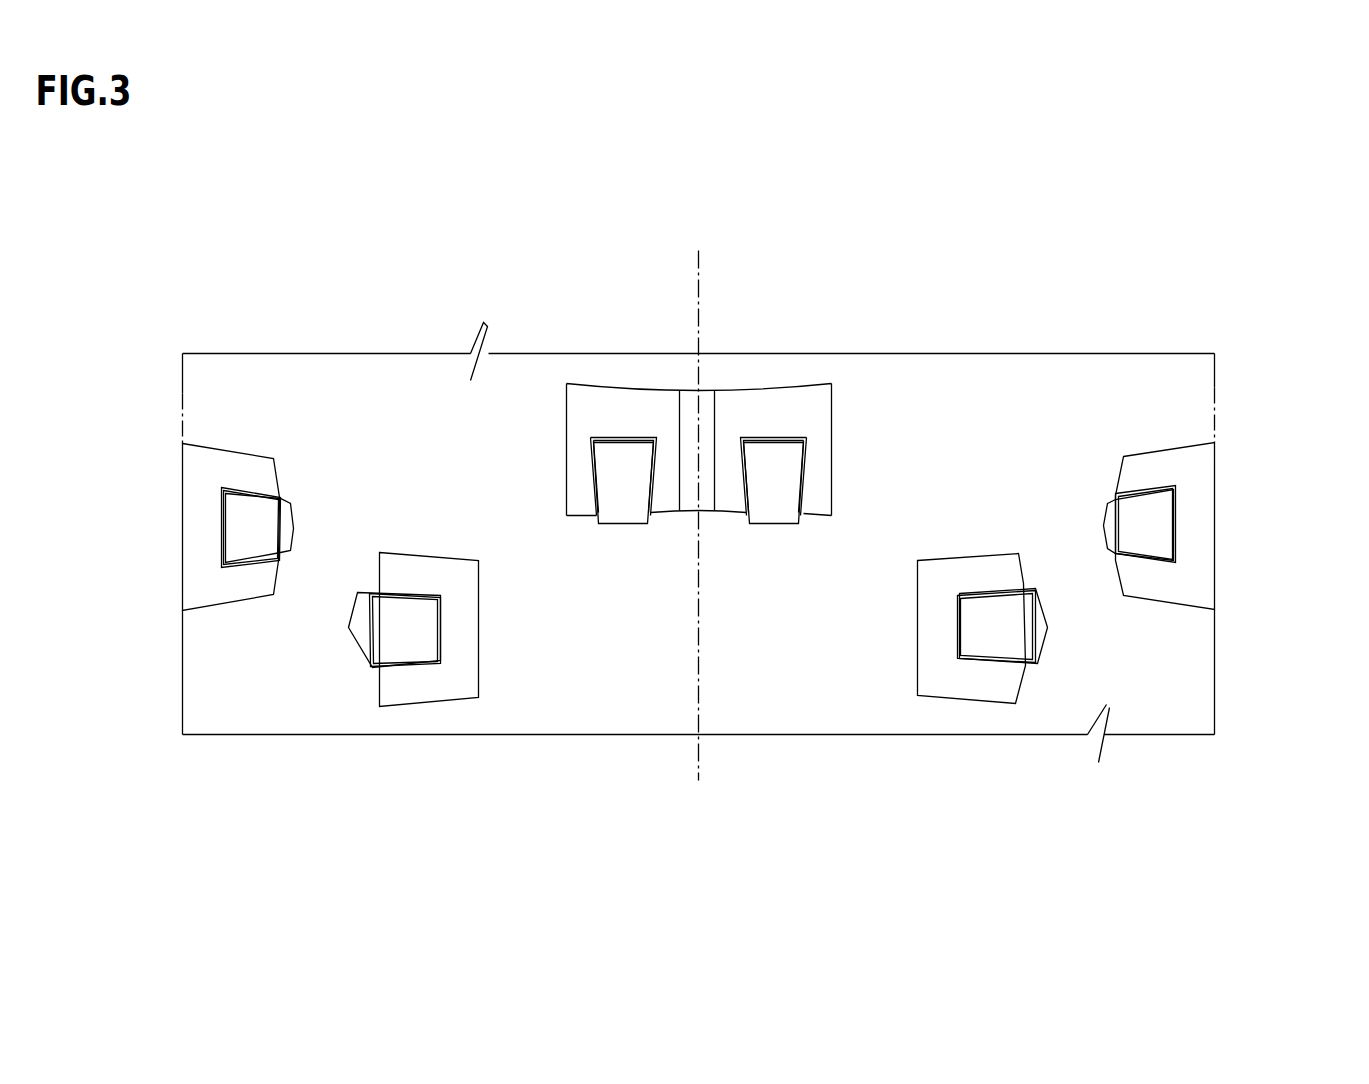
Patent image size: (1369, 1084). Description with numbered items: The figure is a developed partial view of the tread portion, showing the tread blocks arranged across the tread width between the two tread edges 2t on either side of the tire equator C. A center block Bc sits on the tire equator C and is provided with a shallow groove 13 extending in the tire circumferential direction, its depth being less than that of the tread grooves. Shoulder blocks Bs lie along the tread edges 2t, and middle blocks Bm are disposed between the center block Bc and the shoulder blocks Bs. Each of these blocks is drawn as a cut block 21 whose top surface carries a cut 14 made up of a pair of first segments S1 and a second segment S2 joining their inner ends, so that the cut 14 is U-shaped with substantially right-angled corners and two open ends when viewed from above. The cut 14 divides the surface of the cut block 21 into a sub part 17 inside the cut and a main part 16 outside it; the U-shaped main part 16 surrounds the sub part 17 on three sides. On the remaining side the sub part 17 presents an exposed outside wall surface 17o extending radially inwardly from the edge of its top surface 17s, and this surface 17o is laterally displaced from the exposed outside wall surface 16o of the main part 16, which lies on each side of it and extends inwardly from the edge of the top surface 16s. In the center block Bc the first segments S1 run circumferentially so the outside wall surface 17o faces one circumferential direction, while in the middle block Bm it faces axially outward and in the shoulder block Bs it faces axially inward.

The tread edge 2t is at (180, 392).
The tire equator C is at (698, 498).
The cut block 21 is at (699, 461).
The shoulder block Bs is at (230, 473).
The middle block Bm is at (423, 578).
The center block Bc is at (594, 417).
The shallow groove 13 is at (680, 418).
The cut 14 is at (875, 800).
The main part 16 is at (812, 410).
The sub part 17 is at (762, 463).
The top surface of the main part 16s is at (203, 505).
The top surface of the sub part 17s is at (257, 527).
The outside wall surface of the main part 16o is at (278, 587).
The outside wall surface of the sub part 17o is at (292, 543).
The first segment S1 is at (720, 503).
The second segment S2 is at (720, 503).